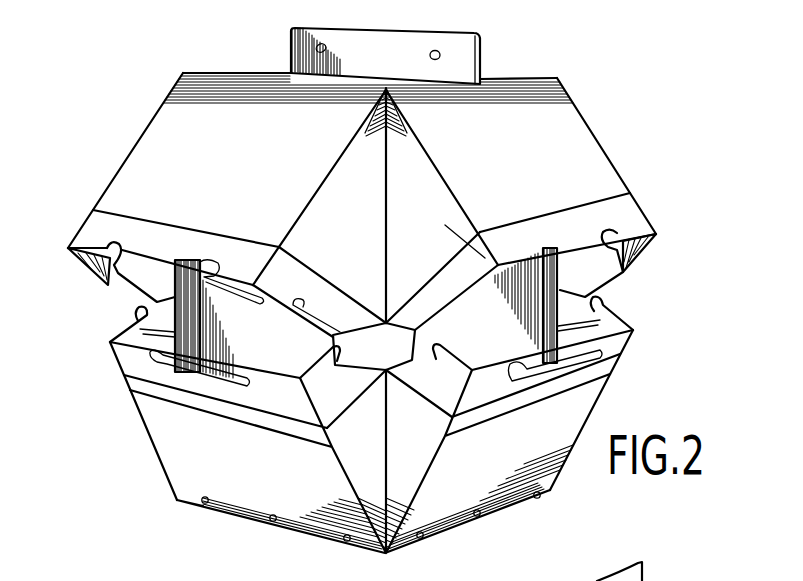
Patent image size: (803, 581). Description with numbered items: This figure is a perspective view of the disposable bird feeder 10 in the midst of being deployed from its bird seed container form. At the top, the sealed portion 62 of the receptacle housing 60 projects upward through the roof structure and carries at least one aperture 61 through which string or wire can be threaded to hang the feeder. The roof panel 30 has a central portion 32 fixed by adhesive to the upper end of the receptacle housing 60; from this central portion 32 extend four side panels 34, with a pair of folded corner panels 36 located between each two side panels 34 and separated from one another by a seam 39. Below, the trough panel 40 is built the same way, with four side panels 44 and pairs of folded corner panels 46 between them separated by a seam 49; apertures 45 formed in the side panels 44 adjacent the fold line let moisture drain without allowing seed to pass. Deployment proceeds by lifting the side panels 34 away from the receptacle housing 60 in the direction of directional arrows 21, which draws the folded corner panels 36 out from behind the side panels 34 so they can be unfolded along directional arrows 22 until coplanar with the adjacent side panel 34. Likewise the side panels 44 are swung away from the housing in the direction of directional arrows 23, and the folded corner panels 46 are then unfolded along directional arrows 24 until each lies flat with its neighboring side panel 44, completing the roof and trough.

The disposable bird feeder 10 is at (612, 147).
The directional arrows 21 is at (682, 246).
The directional arrows 22 is at (470, 162).
The directional arrows 23 is at (645, 313).
The directional arrows 24 is at (421, 470).
The roof panel 30 is at (627, 182).
The central portion 32 is at (282, 73).
The side panels 34 is at (563, 118).
The folded corner panels 36 is at (329, 261).
The seam 39 is at (390, 160).
The trough panel 40 is at (608, 368).
The side panels 44 is at (567, 423).
The apertures 45 is at (537, 497).
The folded corner panels 46 is at (350, 482).
The seam 49 is at (370, 523).
The receptacle housing 60 is at (578, 316).
The aperture 61 is at (435, 51).
The sealed portion 62 is at (485, 56).